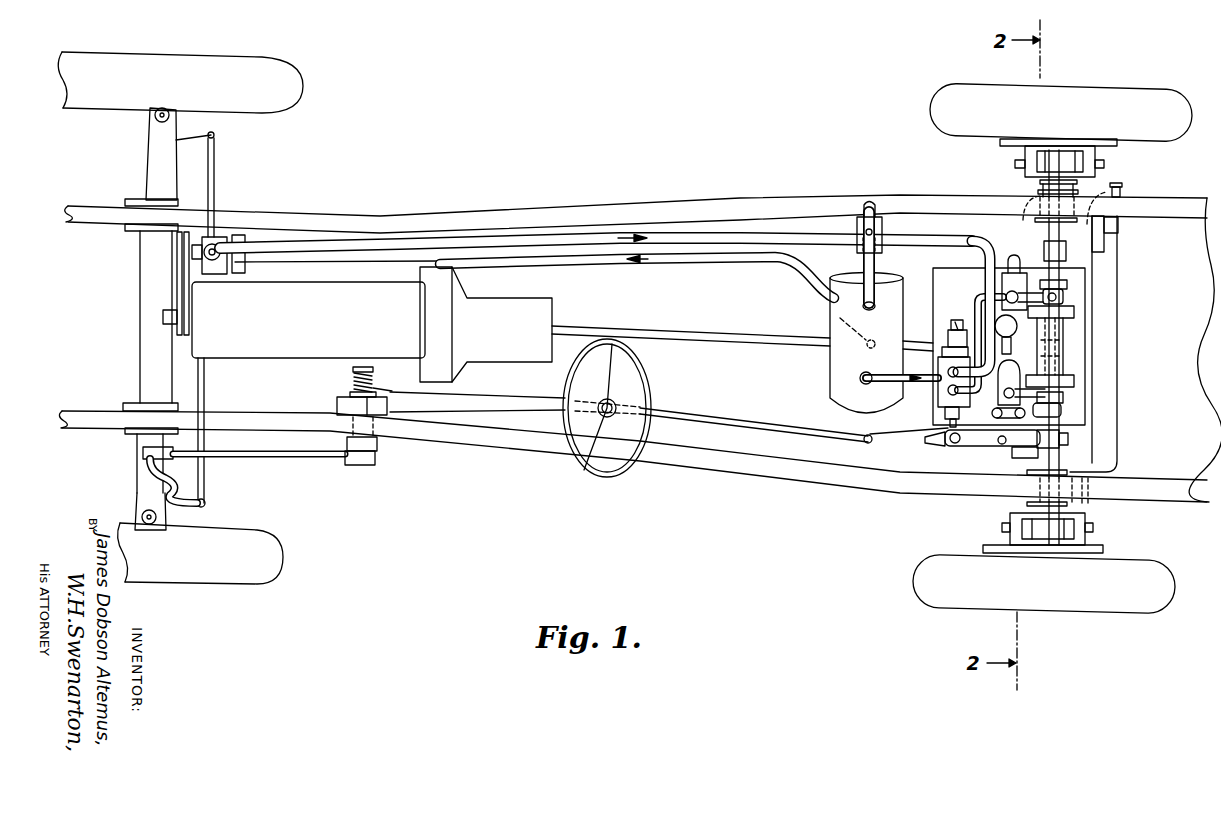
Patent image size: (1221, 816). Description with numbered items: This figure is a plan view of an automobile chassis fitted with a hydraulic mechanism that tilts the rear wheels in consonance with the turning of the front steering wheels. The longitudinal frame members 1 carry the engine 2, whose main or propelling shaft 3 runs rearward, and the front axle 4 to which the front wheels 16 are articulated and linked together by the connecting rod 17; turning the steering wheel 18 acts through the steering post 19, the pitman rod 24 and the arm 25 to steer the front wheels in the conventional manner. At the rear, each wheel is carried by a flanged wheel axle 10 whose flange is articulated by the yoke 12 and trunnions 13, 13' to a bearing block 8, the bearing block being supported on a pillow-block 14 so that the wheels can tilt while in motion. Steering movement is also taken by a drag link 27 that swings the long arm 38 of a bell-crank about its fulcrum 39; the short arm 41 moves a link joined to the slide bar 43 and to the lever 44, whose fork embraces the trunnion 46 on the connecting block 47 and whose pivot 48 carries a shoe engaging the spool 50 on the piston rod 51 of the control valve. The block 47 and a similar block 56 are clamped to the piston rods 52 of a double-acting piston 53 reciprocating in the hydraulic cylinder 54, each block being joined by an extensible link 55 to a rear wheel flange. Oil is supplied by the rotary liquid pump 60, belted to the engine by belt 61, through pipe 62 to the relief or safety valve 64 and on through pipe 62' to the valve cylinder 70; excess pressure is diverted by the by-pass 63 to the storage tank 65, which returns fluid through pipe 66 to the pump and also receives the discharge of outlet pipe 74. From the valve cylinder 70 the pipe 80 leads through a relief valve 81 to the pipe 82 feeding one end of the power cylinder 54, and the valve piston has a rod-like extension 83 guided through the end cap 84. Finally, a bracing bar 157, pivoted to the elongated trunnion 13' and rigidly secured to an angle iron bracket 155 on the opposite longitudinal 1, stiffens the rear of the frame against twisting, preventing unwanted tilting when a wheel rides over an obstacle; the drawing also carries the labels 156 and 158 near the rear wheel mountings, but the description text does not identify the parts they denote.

The longitudinal frame members 1 is at (690, 200).
The engine 2 is at (340, 297).
The main or propelling shaft 3 is at (653, 326).
The front axle 4 is at (138, 358).
The bearing block 8 is at (1084, 188).
The flanged wheel axle 10 is at (1095, 147).
The yoke 12 is at (1025, 156).
The trunnion 13 is at (1058, 346).
The elongated trunnion 13' is at (1115, 529).
The pillow-block 14 is at (1021, 209).
The front wheels 16 is at (288, 86).
The connecting rod 17 is at (217, 163).
The steering wheel 18 is at (651, 379).
The steering post 19 is at (481, 410).
The pitman rod 24 is at (273, 460).
The arm 25 is at (152, 477).
The drag link 27 is at (753, 426).
The long arm 38 is at (1018, 458).
The fulcrum 39 is at (1061, 411).
The short arm 41 is at (993, 413).
The slide bar 43 is at (1009, 347).
The lever 44 is at (970, 445).
The trunnion 46 is at (1030, 455).
The connecting block 47 is at (1069, 441).
The pivot 48 is at (927, 443).
The spool 50 is at (885, 437).
The piston rod 51 is at (948, 426).
The piston rods 52 is at (1061, 436).
The double-acting piston 53 is at (1062, 347).
The hydraulic cylinder 54 is at (1074, 328).
The extensible link 55 is at (1040, 182).
The block 56 is at (1105, 238).
The rotary liquid pump 60 is at (223, 235).
The belt 61 is at (176, 279).
The pipe 62 is at (596, 217).
The pipe 62' is at (968, 291).
The by-pass 63 is at (862, 261).
The relief or safety valve 64 is at (853, 215).
The storage tank 65 is at (846, 297).
The pipe 66 is at (700, 264).
The cylinder 70 is at (941, 360).
The outlet pipe 74 is at (890, 377).
The pipe 80 is at (980, 292).
The relief valve 81 is at (1013, 256).
The pipe 82 is at (1065, 297).
The rod-like extension 83 is at (956, 322).
The end cap 84 is at (948, 330).
The angle iron bracket 155 is at (1119, 228).
The bolt 156 is at (1123, 189).
The bar 157 is at (1118, 303).
The bracket 158 is at (1110, 545).